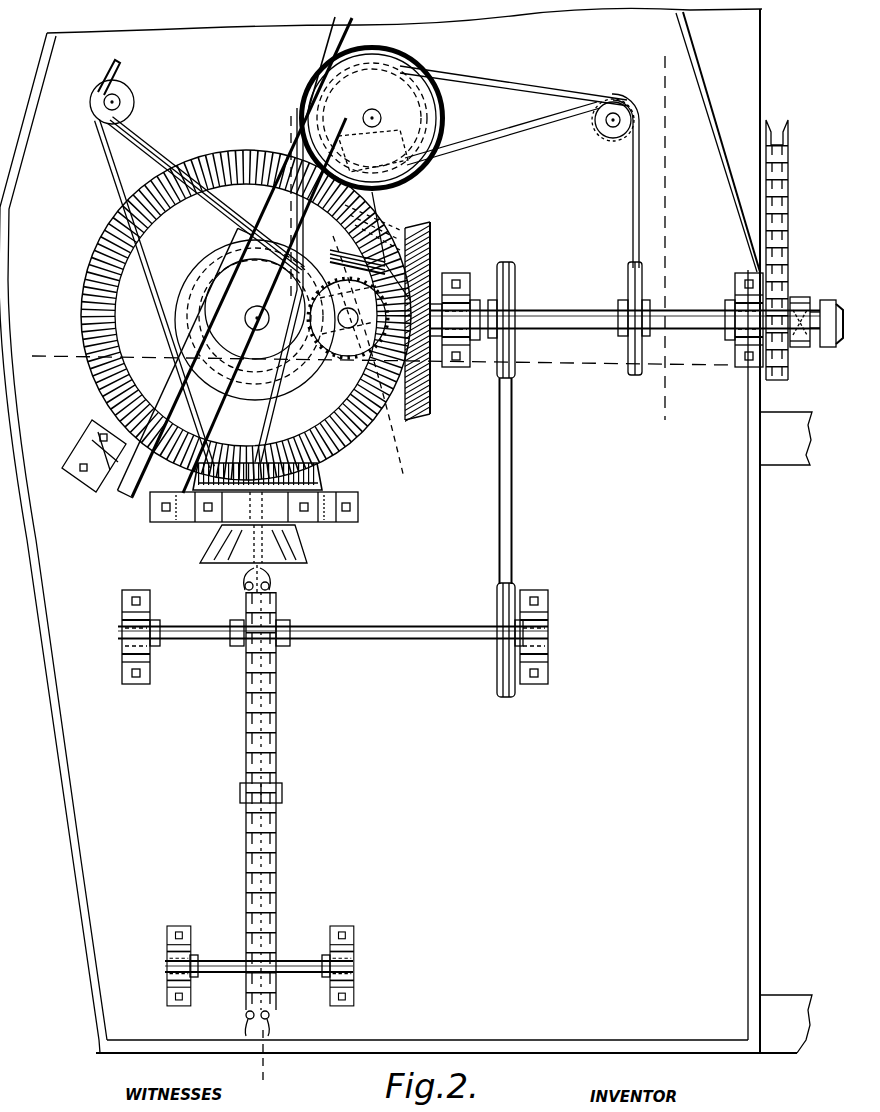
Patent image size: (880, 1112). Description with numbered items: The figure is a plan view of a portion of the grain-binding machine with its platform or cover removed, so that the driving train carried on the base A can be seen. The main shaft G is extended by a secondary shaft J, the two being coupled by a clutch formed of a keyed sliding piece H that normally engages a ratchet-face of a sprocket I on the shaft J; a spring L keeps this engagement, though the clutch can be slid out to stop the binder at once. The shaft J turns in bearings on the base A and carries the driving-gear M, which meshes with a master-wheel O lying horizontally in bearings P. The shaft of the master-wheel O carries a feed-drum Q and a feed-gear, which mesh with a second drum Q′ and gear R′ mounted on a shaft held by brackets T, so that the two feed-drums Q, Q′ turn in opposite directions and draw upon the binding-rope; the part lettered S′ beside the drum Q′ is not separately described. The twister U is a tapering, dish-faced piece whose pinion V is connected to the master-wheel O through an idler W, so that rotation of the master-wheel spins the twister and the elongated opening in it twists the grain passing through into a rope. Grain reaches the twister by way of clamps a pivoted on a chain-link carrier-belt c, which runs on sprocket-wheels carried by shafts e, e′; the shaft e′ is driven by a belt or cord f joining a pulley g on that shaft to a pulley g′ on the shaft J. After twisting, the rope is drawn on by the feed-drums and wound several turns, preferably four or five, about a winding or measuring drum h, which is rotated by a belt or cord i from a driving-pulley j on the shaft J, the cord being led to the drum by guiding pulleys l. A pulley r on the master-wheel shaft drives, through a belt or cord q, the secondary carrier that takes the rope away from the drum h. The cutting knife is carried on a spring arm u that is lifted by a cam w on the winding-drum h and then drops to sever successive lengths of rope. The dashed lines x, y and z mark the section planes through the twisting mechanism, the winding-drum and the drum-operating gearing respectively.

The base A is at (406, 530).
The main shaft G is at (833, 305).
The keyed sliding piece H is at (798, 350).
The sprocket I is at (772, 396).
The secondary shaft J is at (625, 320).
The spring L is at (828, 350).
The driving-gear M is at (432, 248).
The master-wheel O is at (246, 315).
The bearings P is at (255, 331).
The feed-drum Q is at (255, 309).
The feed-drum Q′ is at (348, 320).
The pawl S′ is at (348, 318).
The gear R′ is at (335, 368).
The brackets T is at (336, 254).
The twister U is at (312, 556).
The pinion V is at (322, 494).
The idler W is at (322, 474).
The clamps a is at (267, 578).
The carrier-belt c is at (274, 768).
The shaft e is at (306, 958).
The shaft e′ is at (376, 626).
The belt f is at (514, 508).
The pulley g is at (518, 596).
The pulley g′ is at (516, 296).
The winding-drum h is at (385, 118).
The belt i is at (640, 188).
The driving-pulley j is at (640, 304).
The guiding pulleys l is at (598, 130).
The belt q is at (152, 150).
The pulley r is at (200, 272).
The arm u is at (398, 38).
The cam w is at (237, 249).
The section line x is at (277, 596).
The section line y is at (376, 359).
The section line z is at (660, 237).